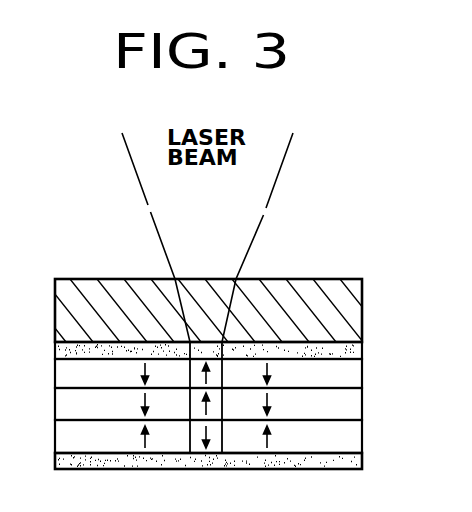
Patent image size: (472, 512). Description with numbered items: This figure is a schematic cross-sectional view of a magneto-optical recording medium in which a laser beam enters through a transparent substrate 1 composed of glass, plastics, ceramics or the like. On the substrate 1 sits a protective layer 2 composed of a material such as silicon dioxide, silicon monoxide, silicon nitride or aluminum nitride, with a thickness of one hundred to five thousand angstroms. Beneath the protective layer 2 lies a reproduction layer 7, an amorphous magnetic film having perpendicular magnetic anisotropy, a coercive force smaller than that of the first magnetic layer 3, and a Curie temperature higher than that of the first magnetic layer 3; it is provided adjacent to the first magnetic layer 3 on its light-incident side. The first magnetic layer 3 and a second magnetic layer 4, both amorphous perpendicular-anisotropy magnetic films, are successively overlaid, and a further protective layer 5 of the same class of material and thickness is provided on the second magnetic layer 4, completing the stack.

The transparent substrate 1 is at (355, 305).
The protective layer 2 is at (355, 350).
The reproduction layer 7 is at (352, 370).
The first magnetic layer 3 is at (355, 405).
The second magnetic layer 4 is at (355, 433).
The protective layer 5 is at (355, 458).